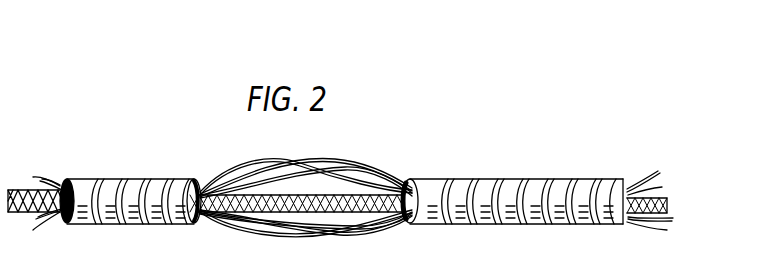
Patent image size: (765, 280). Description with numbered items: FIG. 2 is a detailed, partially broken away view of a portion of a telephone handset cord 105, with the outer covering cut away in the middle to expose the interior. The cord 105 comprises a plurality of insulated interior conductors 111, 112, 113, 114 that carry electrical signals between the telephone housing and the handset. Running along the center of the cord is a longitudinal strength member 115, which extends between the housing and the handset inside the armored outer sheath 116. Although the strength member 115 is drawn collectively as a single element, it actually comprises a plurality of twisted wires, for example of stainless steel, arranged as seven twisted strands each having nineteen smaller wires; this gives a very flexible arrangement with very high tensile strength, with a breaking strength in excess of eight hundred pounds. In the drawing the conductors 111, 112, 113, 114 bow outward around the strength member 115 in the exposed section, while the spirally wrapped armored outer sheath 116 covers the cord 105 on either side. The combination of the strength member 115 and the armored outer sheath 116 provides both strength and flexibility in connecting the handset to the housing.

The handset cord 105 is at (450, 176).
The insulated interior conductor 111 is at (243, 162).
The insulated interior conductor 112 is at (332, 165).
The insulated interior conductor 113 is at (224, 229).
The insulated interior conductor 114 is at (370, 231).
The longitudinal strength member 115 is at (292, 196).
The armored outer sheath 116 is at (56, 180).